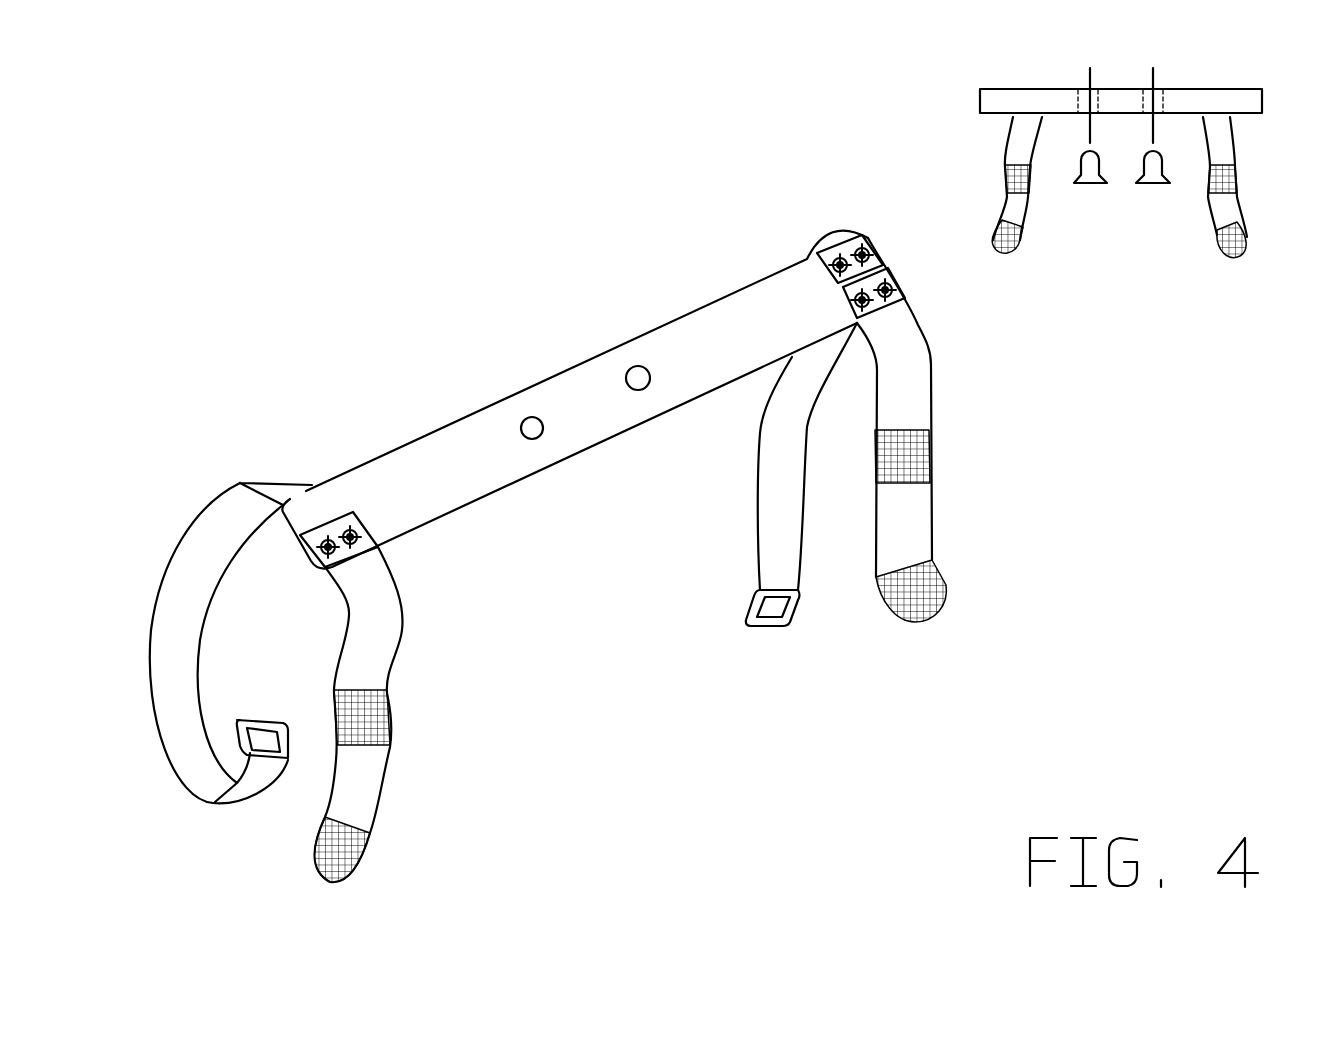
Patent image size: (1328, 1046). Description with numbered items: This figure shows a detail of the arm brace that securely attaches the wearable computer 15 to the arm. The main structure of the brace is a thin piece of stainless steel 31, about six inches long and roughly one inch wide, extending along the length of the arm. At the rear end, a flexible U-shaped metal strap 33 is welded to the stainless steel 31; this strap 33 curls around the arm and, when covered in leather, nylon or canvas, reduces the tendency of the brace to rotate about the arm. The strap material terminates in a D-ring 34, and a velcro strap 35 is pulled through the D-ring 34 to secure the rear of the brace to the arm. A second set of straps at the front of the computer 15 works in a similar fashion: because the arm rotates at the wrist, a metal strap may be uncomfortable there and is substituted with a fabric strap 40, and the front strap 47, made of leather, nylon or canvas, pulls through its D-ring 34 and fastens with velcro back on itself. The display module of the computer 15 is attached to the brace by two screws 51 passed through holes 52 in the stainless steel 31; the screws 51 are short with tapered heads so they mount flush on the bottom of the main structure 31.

The computer 15 is at (1260, 102).
The stainless steel main structure 31 is at (520, 390).
The U-shaped metal strap 33 is at (282, 478).
The D-ring 34 is at (782, 628).
The velcro strap 35 is at (377, 790).
The strap 40 is at (833, 232).
The front strap 47 is at (917, 527).
The screws 51 is at (1090, 173).
The holes 52 is at (535, 440).